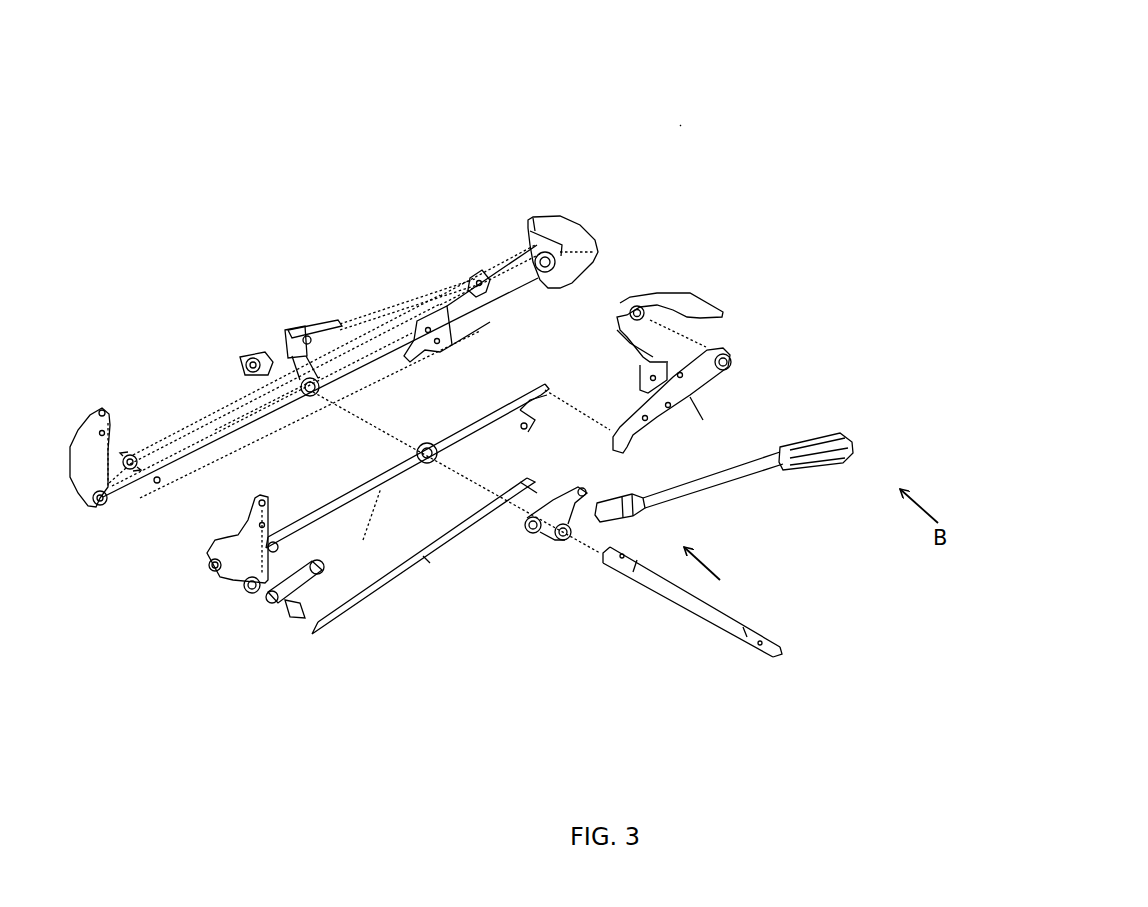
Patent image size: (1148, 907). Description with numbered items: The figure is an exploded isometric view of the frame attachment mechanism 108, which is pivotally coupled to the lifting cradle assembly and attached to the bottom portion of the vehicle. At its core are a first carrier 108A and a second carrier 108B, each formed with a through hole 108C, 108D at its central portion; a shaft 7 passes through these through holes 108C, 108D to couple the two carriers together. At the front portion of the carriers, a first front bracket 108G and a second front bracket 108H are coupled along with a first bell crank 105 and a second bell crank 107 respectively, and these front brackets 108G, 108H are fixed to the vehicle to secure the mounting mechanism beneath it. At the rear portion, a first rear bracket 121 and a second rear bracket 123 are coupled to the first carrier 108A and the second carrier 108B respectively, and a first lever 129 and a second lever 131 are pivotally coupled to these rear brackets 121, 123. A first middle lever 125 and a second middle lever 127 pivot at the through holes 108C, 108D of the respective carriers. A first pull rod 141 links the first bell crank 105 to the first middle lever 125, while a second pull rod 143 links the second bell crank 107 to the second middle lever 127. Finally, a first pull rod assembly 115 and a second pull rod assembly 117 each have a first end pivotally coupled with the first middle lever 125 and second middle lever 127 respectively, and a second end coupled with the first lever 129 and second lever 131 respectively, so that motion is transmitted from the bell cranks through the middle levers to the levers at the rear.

The shaft 7 is at (683, 600).
The first bell crank 105 is at (275, 603).
The second bell crank 107 is at (97, 504).
The frame attachment mechanism 108 is at (682, 122).
The first carrier 108A is at (424, 556).
The second carrier 108B is at (243, 415).
The through hole 108C is at (468, 488).
The through hole 108D is at (337, 409).
The first front bracket 108G is at (250, 587).
The second front bracket 108H is at (108, 480).
The first pull rod assembly 115 is at (764, 576).
The second pull rod assembly 117 is at (403, 316).
The first rear bracket 121 is at (753, 523).
The second rear bracket 123 is at (477, 277).
The first middle lever 125 is at (540, 528).
The second middle lever 127 is at (293, 323).
The first lever 129 is at (670, 302).
The second lever 131 is at (553, 218).
The first pull rod 141 is at (427, 560).
The second pull rod 143 is at (246, 405).